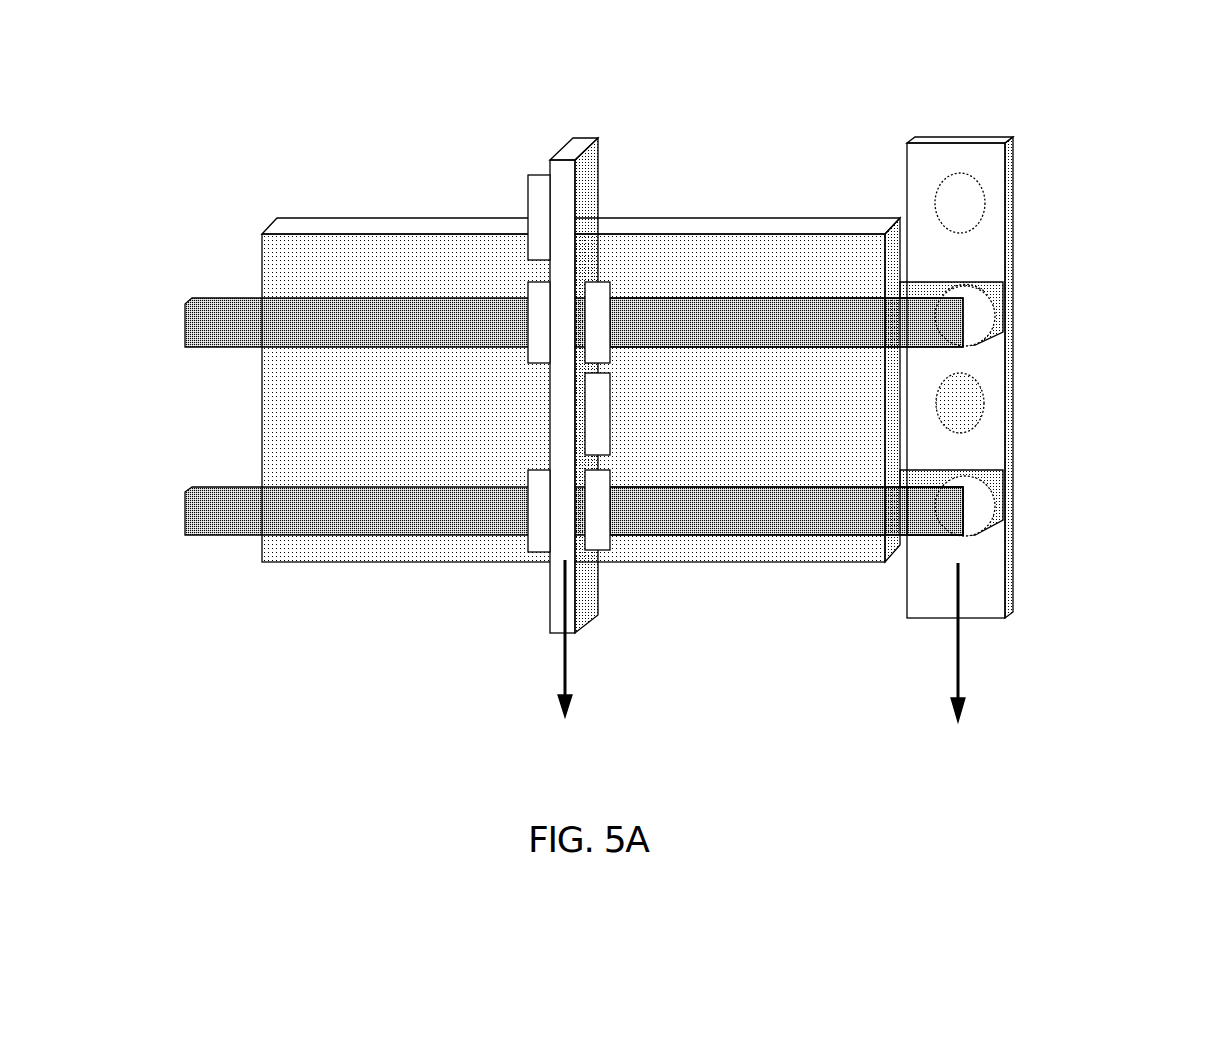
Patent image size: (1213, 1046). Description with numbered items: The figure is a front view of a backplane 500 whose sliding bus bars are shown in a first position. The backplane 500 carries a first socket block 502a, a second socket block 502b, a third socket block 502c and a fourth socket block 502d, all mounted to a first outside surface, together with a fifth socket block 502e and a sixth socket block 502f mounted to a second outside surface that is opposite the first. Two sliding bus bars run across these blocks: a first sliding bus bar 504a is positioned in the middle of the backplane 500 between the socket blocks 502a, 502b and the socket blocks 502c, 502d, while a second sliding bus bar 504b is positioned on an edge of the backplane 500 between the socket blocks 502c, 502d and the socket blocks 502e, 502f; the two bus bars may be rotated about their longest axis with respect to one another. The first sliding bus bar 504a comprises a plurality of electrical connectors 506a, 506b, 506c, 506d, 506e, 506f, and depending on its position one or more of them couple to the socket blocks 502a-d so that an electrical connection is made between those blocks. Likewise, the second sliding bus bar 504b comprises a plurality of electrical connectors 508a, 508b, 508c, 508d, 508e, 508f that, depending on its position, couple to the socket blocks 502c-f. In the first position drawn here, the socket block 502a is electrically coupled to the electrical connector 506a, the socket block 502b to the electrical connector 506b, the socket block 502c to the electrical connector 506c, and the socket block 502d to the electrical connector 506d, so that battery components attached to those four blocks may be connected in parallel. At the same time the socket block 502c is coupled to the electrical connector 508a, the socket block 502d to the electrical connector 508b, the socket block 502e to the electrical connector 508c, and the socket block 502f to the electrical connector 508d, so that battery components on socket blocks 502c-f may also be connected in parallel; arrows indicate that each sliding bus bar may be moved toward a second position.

The backplane 500 is at (306, 229).
The first socket block 502a is at (574, 322).
The second socket block 502b is at (574, 511).
The third socket block 502c is at (786, 322).
The fourth socket block 502d is at (786, 511).
The fifth socket block 502e is at (1000, 293).
The sixth socket block 502f is at (997, 470).
The first sliding bus bar 504a is at (572, 143).
The second sliding bus bar 504b is at (957, 143).
The electrical connector 506a is at (533, 325).
The electrical connector 506b is at (533, 545).
The electrical connector 506c is at (597, 300).
The electrical connector 506d is at (600, 540).
The electrical connector 506e is at (533, 200).
The electrical connector 506f is at (607, 412).
The electrical connector 508a is at (963, 318).
The electrical connector 508b is at (972, 505).
The electrical connector 508c is at (972, 287).
The electrical connector 508d is at (1012, 510).
The electrical connector 508e is at (948, 203).
The electrical connector 508f is at (987, 402).